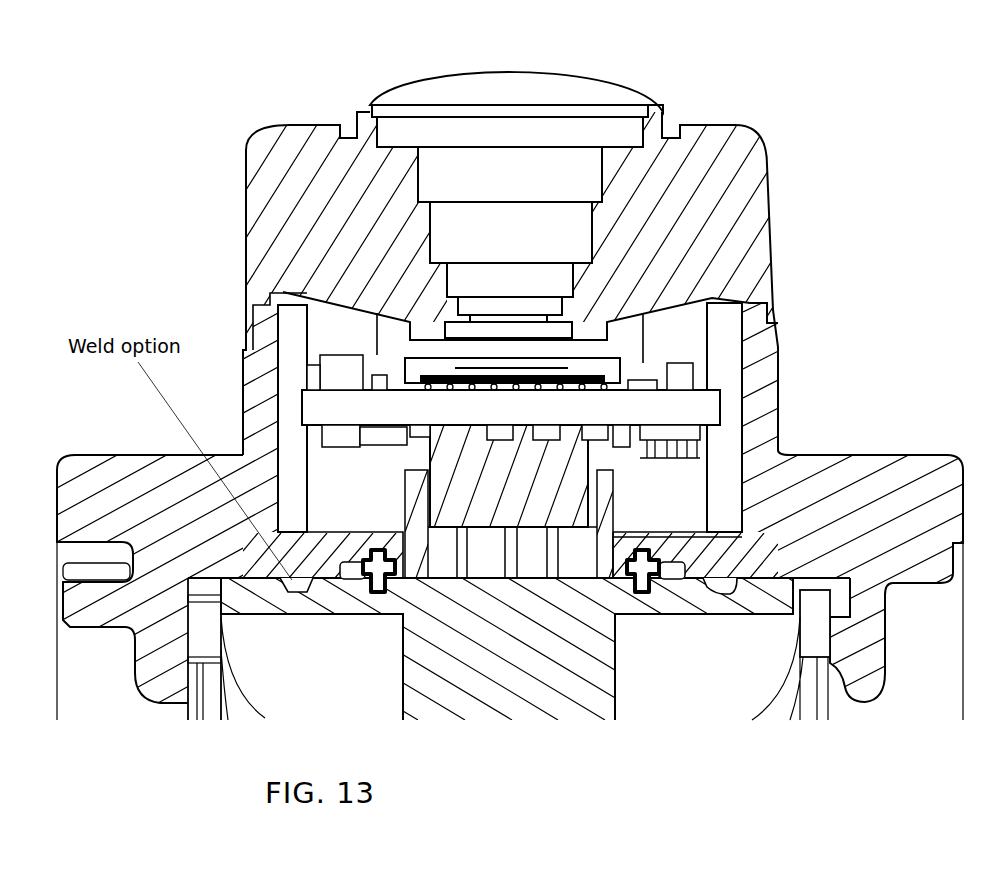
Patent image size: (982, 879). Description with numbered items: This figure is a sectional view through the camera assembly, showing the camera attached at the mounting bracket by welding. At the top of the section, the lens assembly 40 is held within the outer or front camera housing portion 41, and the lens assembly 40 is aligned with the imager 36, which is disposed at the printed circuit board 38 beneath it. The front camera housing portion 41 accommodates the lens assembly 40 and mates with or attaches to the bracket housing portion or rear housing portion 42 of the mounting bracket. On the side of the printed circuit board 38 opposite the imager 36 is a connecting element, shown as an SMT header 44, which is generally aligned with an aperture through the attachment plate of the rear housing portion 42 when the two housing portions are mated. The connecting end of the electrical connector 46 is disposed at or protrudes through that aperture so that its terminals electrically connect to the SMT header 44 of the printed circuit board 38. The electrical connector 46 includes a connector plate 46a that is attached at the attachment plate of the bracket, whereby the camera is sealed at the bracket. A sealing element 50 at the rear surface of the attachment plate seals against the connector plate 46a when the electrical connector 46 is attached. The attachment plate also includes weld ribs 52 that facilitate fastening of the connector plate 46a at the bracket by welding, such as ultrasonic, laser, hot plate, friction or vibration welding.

The imager 36 is at (540, 357).
The printed circuit board 38 is at (448, 413).
The lens assembly 40 is at (655, 175).
The front camera housing portion 41 is at (295, 190).
The rear housing portion 42 is at (768, 423).
The connector 44 is at (537, 465).
The electrical connector 46 is at (573, 683).
The connector plate 46a is at (760, 600).
The sealing element 50 is at (375, 563).
The weld ribs 52 is at (717, 587).